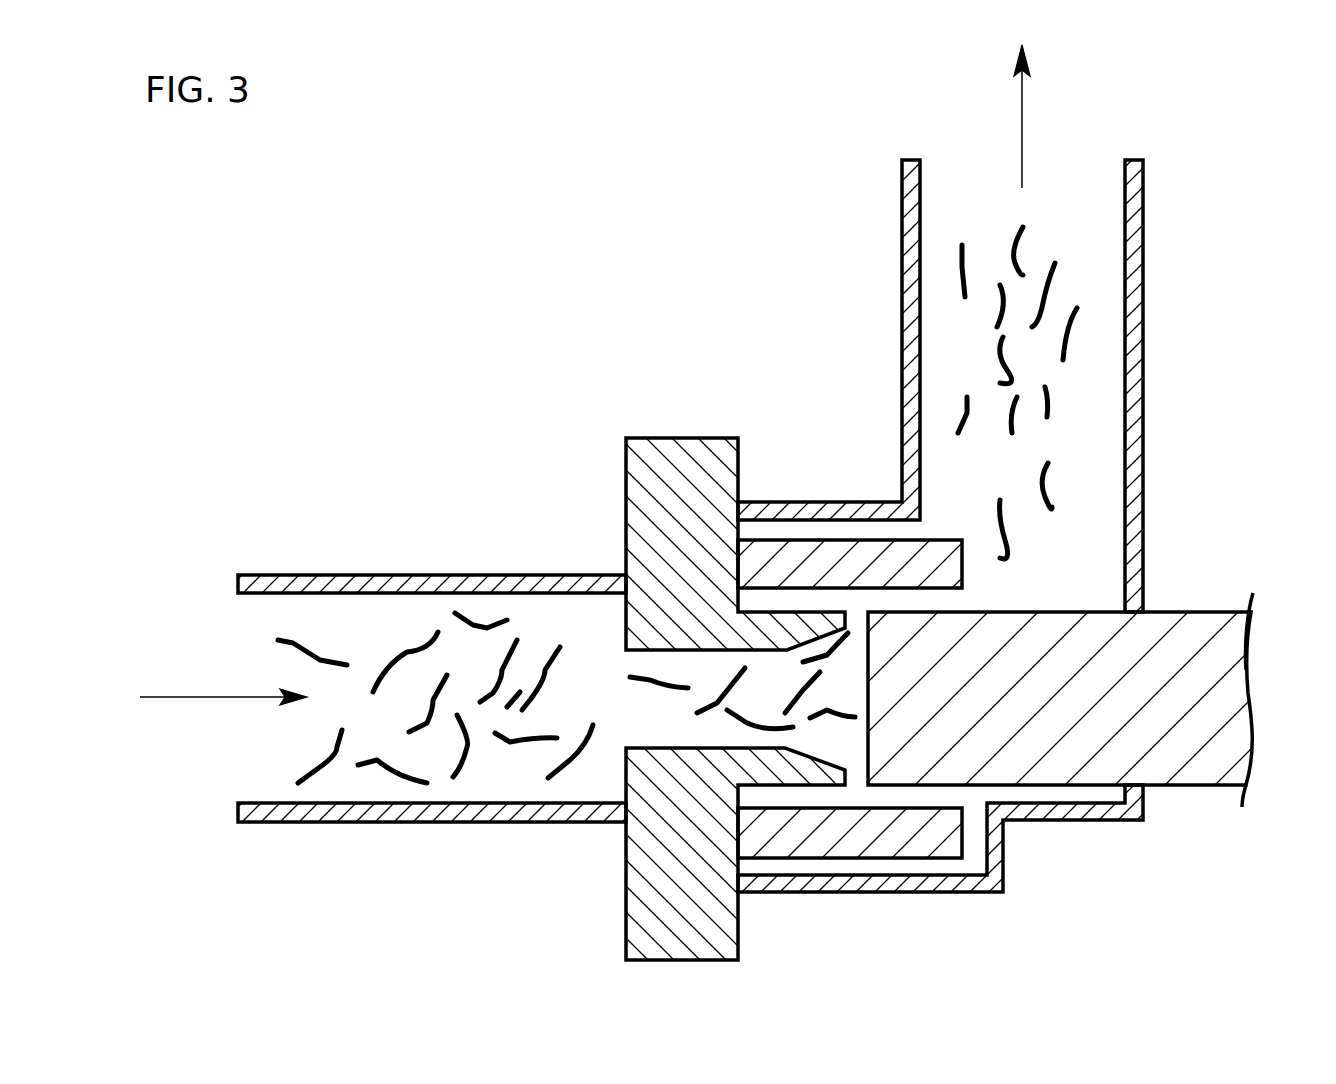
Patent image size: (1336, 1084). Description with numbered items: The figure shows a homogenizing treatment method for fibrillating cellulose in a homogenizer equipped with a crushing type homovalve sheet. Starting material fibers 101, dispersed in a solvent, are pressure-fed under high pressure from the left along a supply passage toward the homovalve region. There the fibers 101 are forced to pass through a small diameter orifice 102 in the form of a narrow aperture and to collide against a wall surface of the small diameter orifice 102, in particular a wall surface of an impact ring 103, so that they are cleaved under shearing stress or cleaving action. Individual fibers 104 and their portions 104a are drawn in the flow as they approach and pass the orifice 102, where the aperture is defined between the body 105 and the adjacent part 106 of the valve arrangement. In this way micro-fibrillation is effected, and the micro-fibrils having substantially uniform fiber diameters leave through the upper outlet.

The starting material fibers 101 is at (402, 650).
The small diameter orifice 102 is at (857, 618).
The impact ring 103 is at (818, 555).
The fiber 104 is at (667, 700).
The fiber tip 104a is at (623, 693).
The nozzle body 105 is at (672, 435).
The roller / drum 106 is at (1190, 737).